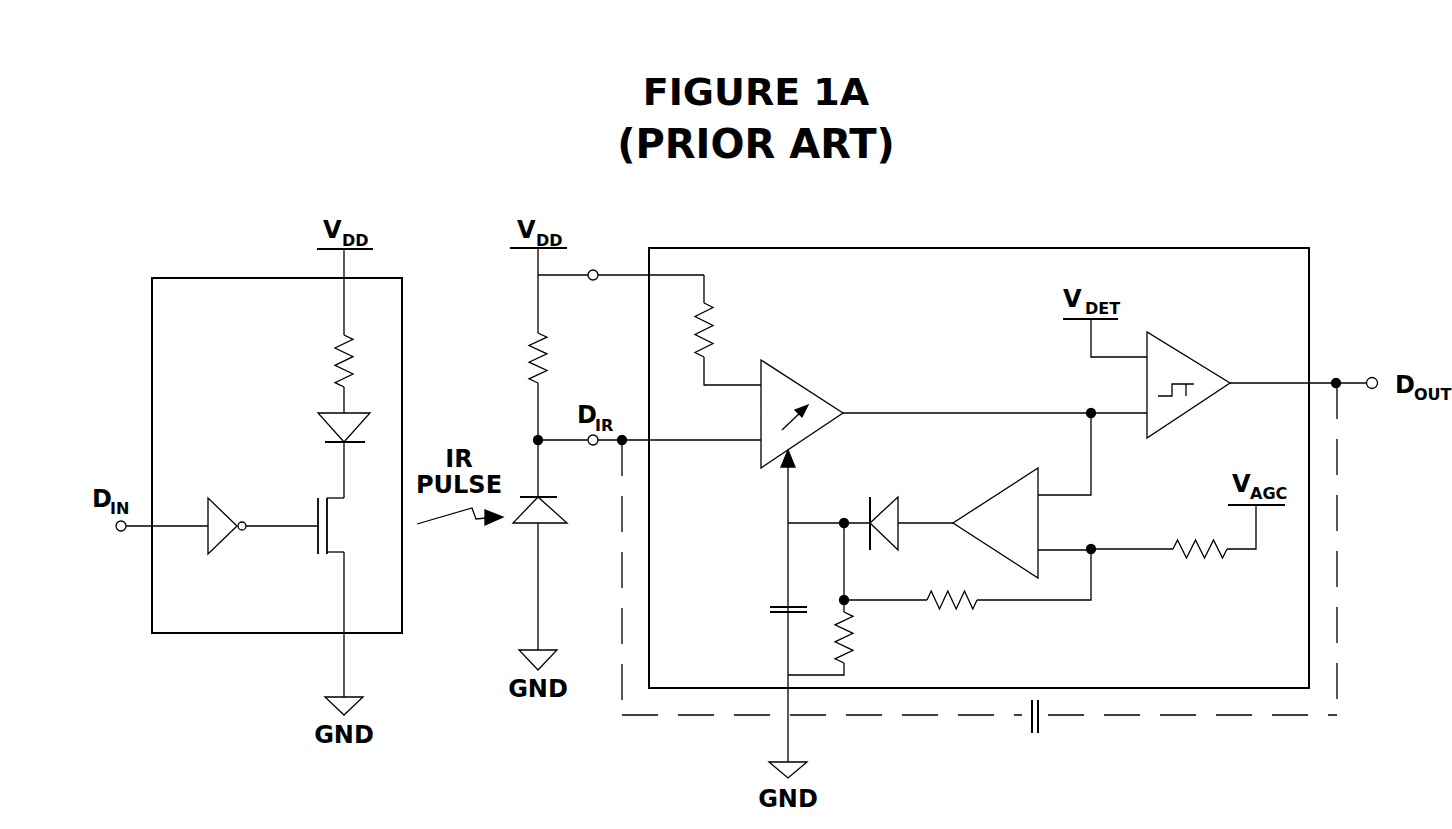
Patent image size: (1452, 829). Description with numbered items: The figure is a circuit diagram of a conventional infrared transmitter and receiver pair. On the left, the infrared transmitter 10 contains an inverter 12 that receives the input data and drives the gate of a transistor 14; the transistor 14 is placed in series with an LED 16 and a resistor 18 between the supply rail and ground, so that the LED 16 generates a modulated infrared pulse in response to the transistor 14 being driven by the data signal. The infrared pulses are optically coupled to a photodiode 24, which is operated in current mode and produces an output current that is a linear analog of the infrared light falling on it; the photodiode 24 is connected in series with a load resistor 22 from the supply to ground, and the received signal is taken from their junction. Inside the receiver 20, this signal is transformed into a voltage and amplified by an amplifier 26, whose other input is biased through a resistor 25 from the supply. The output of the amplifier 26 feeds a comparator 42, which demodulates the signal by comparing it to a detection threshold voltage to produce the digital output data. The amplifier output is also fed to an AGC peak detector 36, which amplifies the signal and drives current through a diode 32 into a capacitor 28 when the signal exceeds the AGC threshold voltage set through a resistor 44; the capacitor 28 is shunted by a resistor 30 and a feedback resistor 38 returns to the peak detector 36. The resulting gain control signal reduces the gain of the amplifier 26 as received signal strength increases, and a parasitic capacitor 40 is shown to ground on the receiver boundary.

The infrared transmitter 10 is at (180, 278).
The inverter 12 is at (218, 498).
The transistor 14 is at (315, 540).
The LED 16 is at (322, 420).
The resistor 18 is at (337, 350).
The receiver 20 is at (1090, 247).
The load resistor 22 is at (532, 348).
The photodiode 24 is at (553, 525).
The resistor 25 is at (708, 303).
The amplifier 26 is at (787, 372).
The capacitor 28 is at (785, 607).
The resistor 30 is at (850, 638).
The diode 32 is at (902, 508).
The AGC peak detector 36 is at (1000, 488).
The resistor 38 is at (937, 607).
The parasitic capacitor 40 is at (1040, 727).
The comparator 42 is at (1172, 343).
The resistor 44 is at (1188, 560).